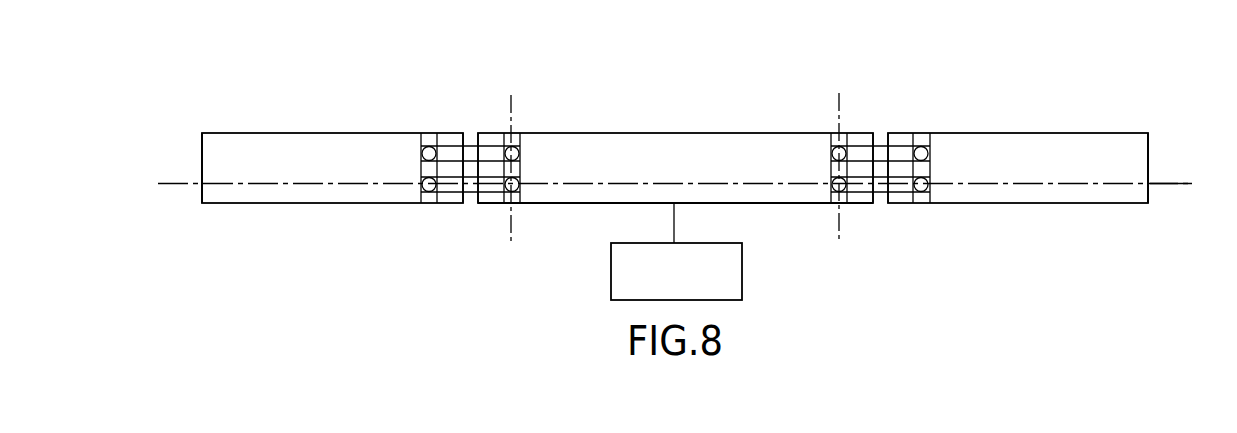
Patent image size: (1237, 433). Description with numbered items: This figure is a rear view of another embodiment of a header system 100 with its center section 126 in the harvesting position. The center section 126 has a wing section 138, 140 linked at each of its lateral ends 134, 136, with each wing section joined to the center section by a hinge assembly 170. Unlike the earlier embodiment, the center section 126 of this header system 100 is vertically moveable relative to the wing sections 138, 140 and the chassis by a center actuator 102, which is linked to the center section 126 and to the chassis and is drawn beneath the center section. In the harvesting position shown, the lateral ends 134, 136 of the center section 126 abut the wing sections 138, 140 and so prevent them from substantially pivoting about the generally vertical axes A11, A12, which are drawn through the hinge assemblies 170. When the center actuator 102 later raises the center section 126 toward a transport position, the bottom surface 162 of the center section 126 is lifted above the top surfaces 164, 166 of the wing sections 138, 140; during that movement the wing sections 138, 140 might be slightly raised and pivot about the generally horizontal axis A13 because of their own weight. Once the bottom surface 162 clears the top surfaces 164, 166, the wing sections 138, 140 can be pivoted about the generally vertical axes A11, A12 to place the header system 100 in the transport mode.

The header system 100 is at (866, 236).
The center actuator 102 is at (610, 272).
The center section 126 is at (708, 147).
The lateral end 134 is at (478, 168).
The lateral end 136 is at (882, 162).
The wing section 138 is at (308, 150).
The wing section 140 is at (1022, 150).
The bottom surface of the center section 162 is at (742, 203).
The top surface of the wing section 164 is at (255, 133).
The top surface of the wing section 166 is at (1082, 135).
The hinge assembly 170 is at (469, 205).
The generally vertical axis A11 is at (512, 110).
The generally vertical axis A12 is at (835, 103).
The generally horizontal axis A13 is at (1172, 183).